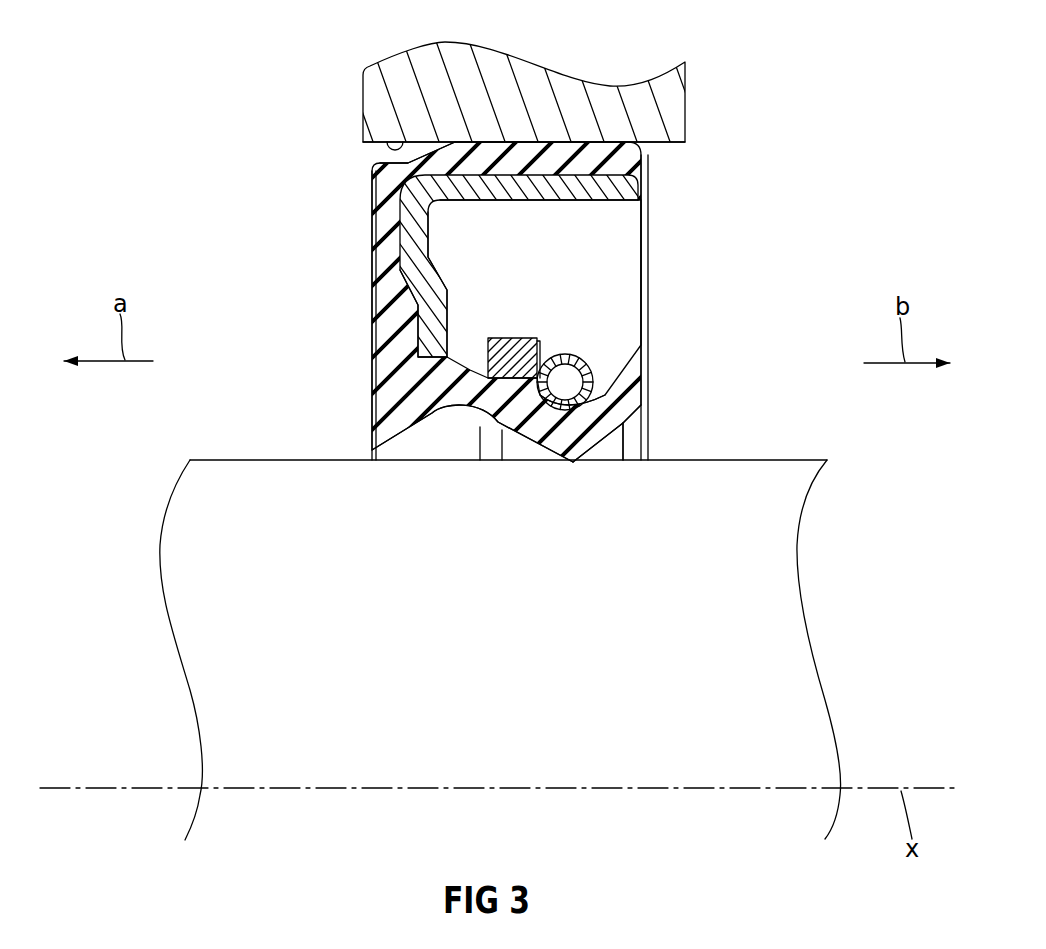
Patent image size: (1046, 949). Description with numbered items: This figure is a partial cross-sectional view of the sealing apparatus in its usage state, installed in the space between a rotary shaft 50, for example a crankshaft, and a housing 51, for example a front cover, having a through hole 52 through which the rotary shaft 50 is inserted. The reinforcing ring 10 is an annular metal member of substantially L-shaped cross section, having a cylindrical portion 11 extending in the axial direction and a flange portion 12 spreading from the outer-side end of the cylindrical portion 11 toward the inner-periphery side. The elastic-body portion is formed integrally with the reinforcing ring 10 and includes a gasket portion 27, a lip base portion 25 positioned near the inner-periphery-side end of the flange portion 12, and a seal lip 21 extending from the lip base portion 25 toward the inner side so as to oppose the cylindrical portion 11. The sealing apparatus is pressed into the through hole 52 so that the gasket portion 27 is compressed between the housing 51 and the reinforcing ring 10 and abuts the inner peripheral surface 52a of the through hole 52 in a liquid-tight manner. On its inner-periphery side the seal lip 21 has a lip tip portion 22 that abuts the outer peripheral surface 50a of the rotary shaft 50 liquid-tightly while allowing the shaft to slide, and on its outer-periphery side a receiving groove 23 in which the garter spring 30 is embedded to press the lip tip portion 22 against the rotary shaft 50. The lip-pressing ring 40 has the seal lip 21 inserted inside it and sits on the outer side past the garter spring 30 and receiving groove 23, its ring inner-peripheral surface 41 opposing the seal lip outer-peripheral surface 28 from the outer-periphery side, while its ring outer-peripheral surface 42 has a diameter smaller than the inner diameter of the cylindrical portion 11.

The reinforcing ring 10 is at (556, 216).
The cylindrical portion 11 is at (580, 203).
The flange portion 12 is at (445, 330).
The seal lip 21 is at (450, 441).
The lip tip portion 22 is at (592, 458).
The receiving groove 23 is at (628, 392).
The lip base portion 25 is at (437, 376).
The gasket portion 27 is at (553, 160).
The seal lip outer-peripheral surface 28 is at (540, 341).
The garter spring 30 is at (590, 337).
The lip-pressing ring 40 is at (547, 330).
The ring inner-peripheral surface 41 is at (490, 425).
The ring outer-peripheral surface 42 is at (514, 338).
The rotary shaft 50 is at (822, 563).
The outer peripheral surface 50a is at (782, 460).
The housing 51 is at (348, 100).
The through hole 52 is at (350, 158).
The inner peripheral surface 52a is at (397, 152).